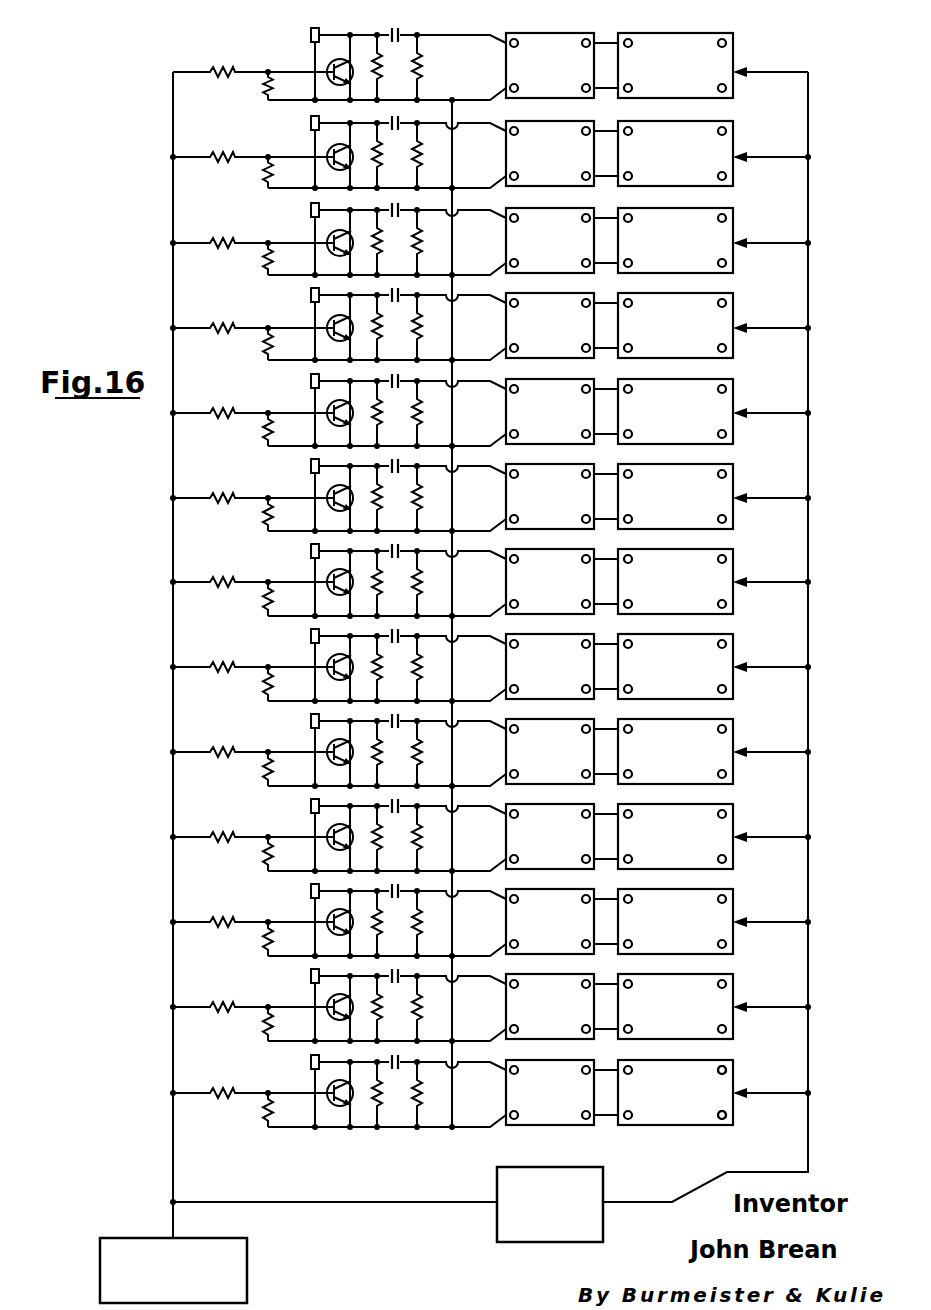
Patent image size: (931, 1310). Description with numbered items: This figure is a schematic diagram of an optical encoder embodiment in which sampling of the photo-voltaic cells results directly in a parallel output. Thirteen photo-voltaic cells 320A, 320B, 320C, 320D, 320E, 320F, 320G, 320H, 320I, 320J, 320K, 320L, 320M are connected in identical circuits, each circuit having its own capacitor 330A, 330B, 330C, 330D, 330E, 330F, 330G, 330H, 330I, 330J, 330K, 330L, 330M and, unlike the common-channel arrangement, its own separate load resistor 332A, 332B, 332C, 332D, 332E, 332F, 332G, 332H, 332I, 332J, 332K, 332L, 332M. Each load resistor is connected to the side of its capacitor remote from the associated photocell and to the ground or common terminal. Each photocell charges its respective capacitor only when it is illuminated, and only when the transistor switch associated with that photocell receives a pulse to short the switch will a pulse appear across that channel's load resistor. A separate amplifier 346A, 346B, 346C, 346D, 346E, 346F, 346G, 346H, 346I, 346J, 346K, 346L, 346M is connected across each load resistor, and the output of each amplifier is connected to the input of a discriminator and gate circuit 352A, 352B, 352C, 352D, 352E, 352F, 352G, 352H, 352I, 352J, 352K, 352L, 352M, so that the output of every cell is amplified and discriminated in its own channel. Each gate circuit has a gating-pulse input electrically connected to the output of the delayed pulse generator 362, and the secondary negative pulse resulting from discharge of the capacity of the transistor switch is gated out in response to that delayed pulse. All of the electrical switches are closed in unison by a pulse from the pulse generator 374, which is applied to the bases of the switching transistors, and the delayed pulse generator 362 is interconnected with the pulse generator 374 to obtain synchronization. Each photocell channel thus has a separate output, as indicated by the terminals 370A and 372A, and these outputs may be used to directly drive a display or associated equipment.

The photo-voltaic cell 320A is at (270, 1091).
The photo-voltaic cell 320B is at (270, 1004).
The photo-voltaic cell 320C is at (270, 919).
The photo-voltaic cell 320D is at (270, 834).
The photo-voltaic cell 320E is at (270, 749).
The photo-voltaic cell 320F is at (270, 664).
The photo-voltaic cell 320G is at (270, 579).
The photo-voltaic cell 320H is at (270, 494).
The photo-voltaic cell 320I is at (270, 409).
The photo-voltaic cell 320J is at (270, 323).
The photo-voltaic cell 320K is at (270, 238).
The photo-voltaic cell 320L is at (270, 151).
The photo-voltaic cell 320M is at (270, 62).
The capacitor 330A is at (396, 1080).
The capacitor 330B is at (396, 999).
The capacitor 330C is at (396, 914).
The capacitor 330D is at (396, 829).
The capacitor 330E is at (396, 744).
The capacitor 330F is at (396, 659).
The capacitor 330G is at (396, 574).
The capacitor 330H is at (396, 489).
The capacitor 330I is at (396, 404).
The capacitor 330J is at (396, 318).
The capacitor 330K is at (396, 233).
The capacitor 330L is at (396, 146).
The capacitor 330M is at (398, 0).
The load resistor 332A is at (439, 1113).
The load resistor 332B is at (451, 1008).
The load resistor 332C is at (451, 923).
The load resistor 332D is at (451, 838).
The load resistor 332E is at (451, 753).
The load resistor 332F is at (451, 668).
The load resistor 332G is at (451, 583).
The load resistor 332H is at (451, 498).
The load resistor 332I is at (451, 413).
The load resistor 332J is at (451, 327).
The load resistor 332K is at (452, 242).
The load resistor 332L is at (451, 155).
The load resistor 332M is at (421, 18).
The amplifier 346A is at (550, 1092).
The amplifier 346B is at (550, 1006).
The amplifier 346C is at (550, 921).
The amplifier 346D is at (550, 836).
The amplifier 346E is at (550, 751).
The amplifier 346F is at (550, 666).
The amplifier 346G is at (550, 581).
The amplifier 346H is at (550, 496).
The amplifier 346I is at (550, 411).
The amplifier 346J is at (550, 325).
The amplifier 346K is at (550, 240).
The amplifier 346L is at (550, 153).
The amplifier 346M is at (527, 41).
The discriminator and gate circuit 352A is at (675, 1092).
The discriminator and gate circuit 352B is at (675, 1006).
The discriminator and gate circuit 352C is at (675, 921).
The discriminator and gate circuit 352D is at (675, 836).
The discriminator and gate circuit 352E is at (675, 751).
The discriminator and gate circuit 352F is at (675, 666).
The discriminator and gate circuit 352G is at (675, 581).
The discriminator and gate circuit 352H is at (675, 496).
The discriminator and gate circuit 352I is at (675, 411).
The discriminator and gate circuit 352J is at (675, 325).
The discriminator and gate circuit 352K is at (675, 240).
The discriminator and gate circuit 352L is at (675, 153).
The discriminator and gate circuit 352M is at (650, 41).
The delayed pulse generator 362 is at (500, 1240).
The output terminal 370A is at (759, 1122).
The output terminal 372A is at (759, 1068).
The pulse generator 374 is at (236, 1258).